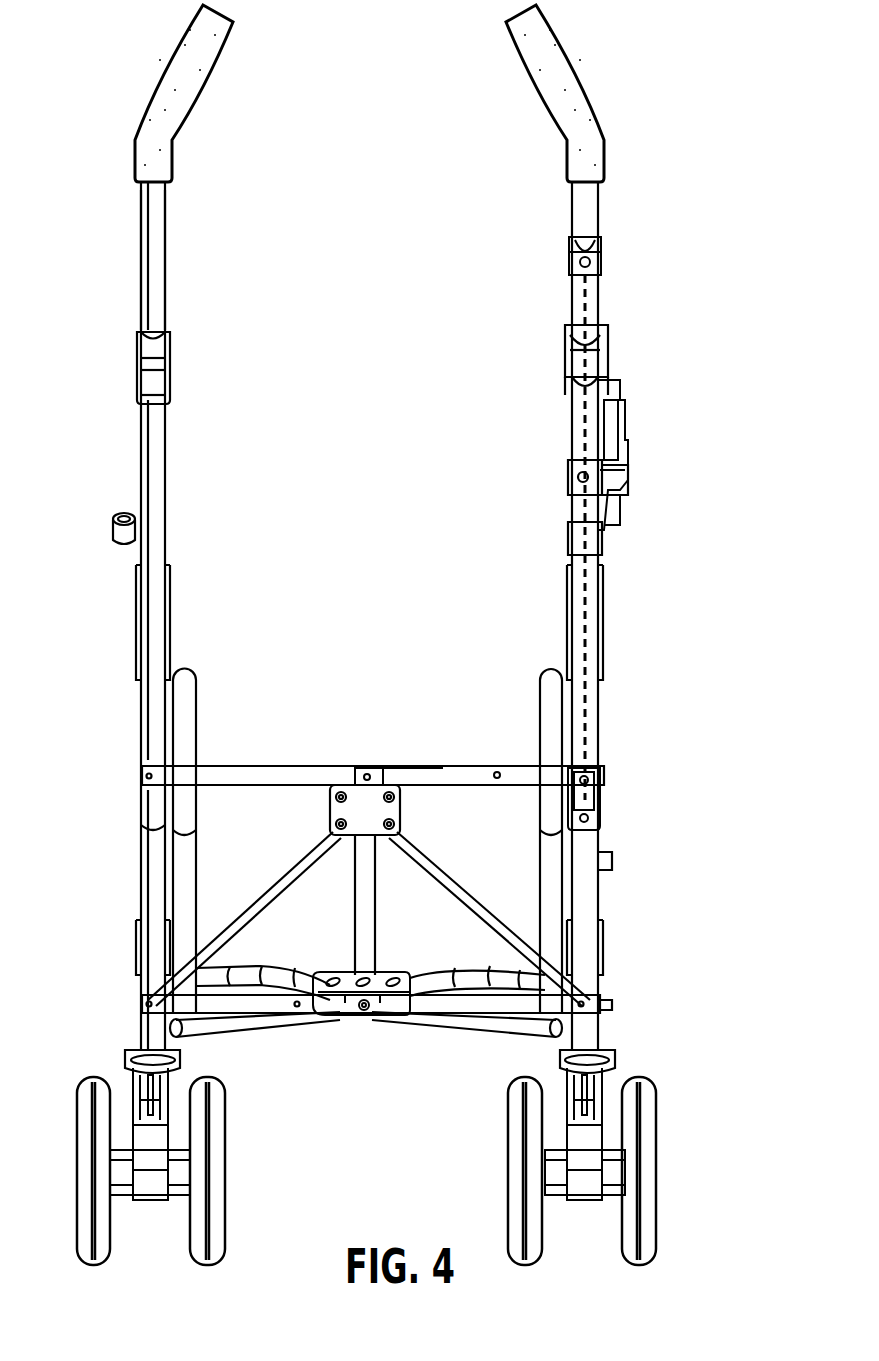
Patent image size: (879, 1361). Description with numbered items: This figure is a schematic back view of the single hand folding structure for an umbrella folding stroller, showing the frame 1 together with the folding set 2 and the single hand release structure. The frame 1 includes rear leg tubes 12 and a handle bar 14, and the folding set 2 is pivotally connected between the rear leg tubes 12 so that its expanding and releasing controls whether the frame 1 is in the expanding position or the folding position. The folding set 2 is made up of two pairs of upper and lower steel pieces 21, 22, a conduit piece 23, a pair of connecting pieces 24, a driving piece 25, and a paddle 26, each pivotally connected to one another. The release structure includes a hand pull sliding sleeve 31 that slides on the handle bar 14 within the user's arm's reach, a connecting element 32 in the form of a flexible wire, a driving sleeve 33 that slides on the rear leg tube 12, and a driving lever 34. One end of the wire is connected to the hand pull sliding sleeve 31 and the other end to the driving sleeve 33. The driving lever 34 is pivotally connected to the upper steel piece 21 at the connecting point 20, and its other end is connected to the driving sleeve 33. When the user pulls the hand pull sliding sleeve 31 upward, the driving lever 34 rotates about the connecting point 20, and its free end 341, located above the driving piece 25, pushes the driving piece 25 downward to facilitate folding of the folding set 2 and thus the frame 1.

The frame 1 is at (640, 455).
The folding set 2 is at (277, 700).
The rear leg tube 12 is at (148, 872).
The handle bar 14 is at (160, 435).
The connecting point 20 is at (497, 778).
The upper steel piece 21 is at (330, 770).
The lower steel piece 22 is at (468, 1000).
The conduit piece 23 is at (372, 920).
The connecting piece 24 is at (255, 910).
The driving piece 25 is at (330, 808).
The paddle 26 is at (362, 987).
The hand pull sliding sleeve 31 is at (600, 256).
The connecting element 32 is at (583, 648).
The driving sleeve 33 is at (595, 810).
The driving lever 34 is at (443, 775).
The free end 341 is at (380, 790).